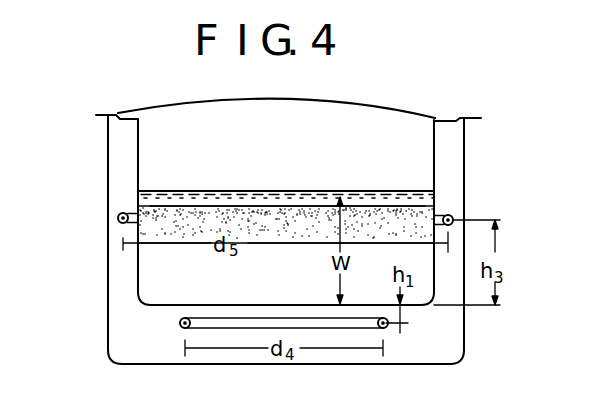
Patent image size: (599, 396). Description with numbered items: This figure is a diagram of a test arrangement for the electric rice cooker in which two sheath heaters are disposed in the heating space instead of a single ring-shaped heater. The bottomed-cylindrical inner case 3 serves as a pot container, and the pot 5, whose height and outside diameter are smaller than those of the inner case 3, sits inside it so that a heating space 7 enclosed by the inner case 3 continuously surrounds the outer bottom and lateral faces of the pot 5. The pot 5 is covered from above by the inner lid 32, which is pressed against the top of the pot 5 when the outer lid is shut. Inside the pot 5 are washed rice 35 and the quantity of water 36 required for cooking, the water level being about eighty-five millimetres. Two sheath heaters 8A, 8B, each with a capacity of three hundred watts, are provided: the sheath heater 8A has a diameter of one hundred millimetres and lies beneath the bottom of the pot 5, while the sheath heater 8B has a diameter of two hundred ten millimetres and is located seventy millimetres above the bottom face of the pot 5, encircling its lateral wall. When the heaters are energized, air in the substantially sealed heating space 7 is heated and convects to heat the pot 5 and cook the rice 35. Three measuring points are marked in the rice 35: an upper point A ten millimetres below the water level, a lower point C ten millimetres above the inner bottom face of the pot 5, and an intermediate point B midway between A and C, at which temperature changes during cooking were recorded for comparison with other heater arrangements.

The inner case 3 is at (108, 305).
The pot 5 is at (136, 183).
The heating space 7 is at (444, 348).
The sheath heater 8A is at (180, 324).
The sheath heater 8B is at (117, 218).
The inner lid 32 is at (397, 108).
The rice 35 is at (188, 191).
The water 36 is at (237, 189).
The upper portion measuring point A is at (284, 192).
The intermediate portion measuring point B is at (287, 239).
The lower portion measuring point C is at (287, 295).